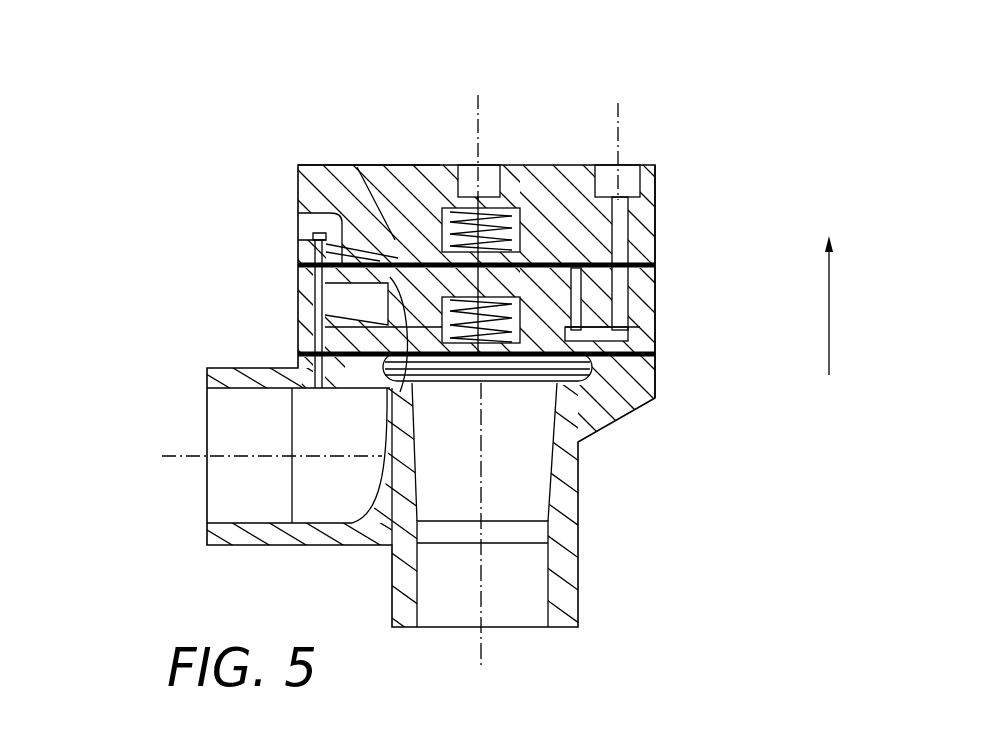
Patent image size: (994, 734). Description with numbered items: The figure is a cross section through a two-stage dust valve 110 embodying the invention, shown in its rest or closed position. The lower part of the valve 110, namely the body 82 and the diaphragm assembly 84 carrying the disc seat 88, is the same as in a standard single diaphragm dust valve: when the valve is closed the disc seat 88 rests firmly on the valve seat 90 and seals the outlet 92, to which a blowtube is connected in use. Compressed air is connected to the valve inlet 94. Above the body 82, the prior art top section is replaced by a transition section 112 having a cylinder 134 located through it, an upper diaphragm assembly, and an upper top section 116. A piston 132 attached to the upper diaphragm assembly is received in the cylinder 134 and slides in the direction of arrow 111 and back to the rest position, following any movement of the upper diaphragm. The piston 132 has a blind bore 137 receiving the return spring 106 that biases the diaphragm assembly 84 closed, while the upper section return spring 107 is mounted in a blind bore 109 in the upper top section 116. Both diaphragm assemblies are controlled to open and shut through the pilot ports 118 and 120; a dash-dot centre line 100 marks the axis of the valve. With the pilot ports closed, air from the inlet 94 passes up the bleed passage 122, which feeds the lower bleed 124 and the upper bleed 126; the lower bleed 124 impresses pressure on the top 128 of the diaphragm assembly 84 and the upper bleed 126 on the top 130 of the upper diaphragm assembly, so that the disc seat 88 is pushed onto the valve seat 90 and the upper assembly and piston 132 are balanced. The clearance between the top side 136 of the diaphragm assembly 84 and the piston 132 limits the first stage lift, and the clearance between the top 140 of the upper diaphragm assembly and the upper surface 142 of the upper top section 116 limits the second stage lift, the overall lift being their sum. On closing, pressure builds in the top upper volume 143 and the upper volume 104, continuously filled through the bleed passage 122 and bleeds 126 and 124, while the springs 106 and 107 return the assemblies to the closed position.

The body 82 is at (240, 553).
The diaphragm assembly 84 is at (600, 372).
The disc seat 88 is at (527, 373).
The valve seat 90 is at (398, 383).
The outlet 92 is at (520, 608).
The valve inlet 94 is at (227, 472).
The central axis 100 is at (482, 163).
The upper volume 104 is at (653, 365).
The return spring 106 is at (498, 362).
The upper section return spring 107 is at (525, 210).
The blind bore 109 is at (445, 205).
The valve 110 is at (205, 130).
The arrow 111 is at (844, 305).
The transition section 112 is at (657, 303).
The upper top section 116 is at (643, 232).
The pilot port 118 is at (488, 163).
The pilot port 120 is at (625, 180).
The bleed passage 122 is at (440, 292).
The lower bleed 124 is at (385, 330).
The upper bleed 126 is at (335, 223).
The top of the diaphragm assembly 128 is at (565, 245).
The top of upper diaphragm assembly 130 is at (645, 225).
The piston 132 is at (453, 283).
The cylinder 134 is at (318, 255).
The top side of the diaphragm assembly 136 is at (387, 380).
The blind bore 137 is at (400, 322).
The top of the upper diaphragm assembly 140 is at (436, 270).
The upper surface of the upper top section 142 is at (357, 167).
The top upper volume 143 is at (580, 265).